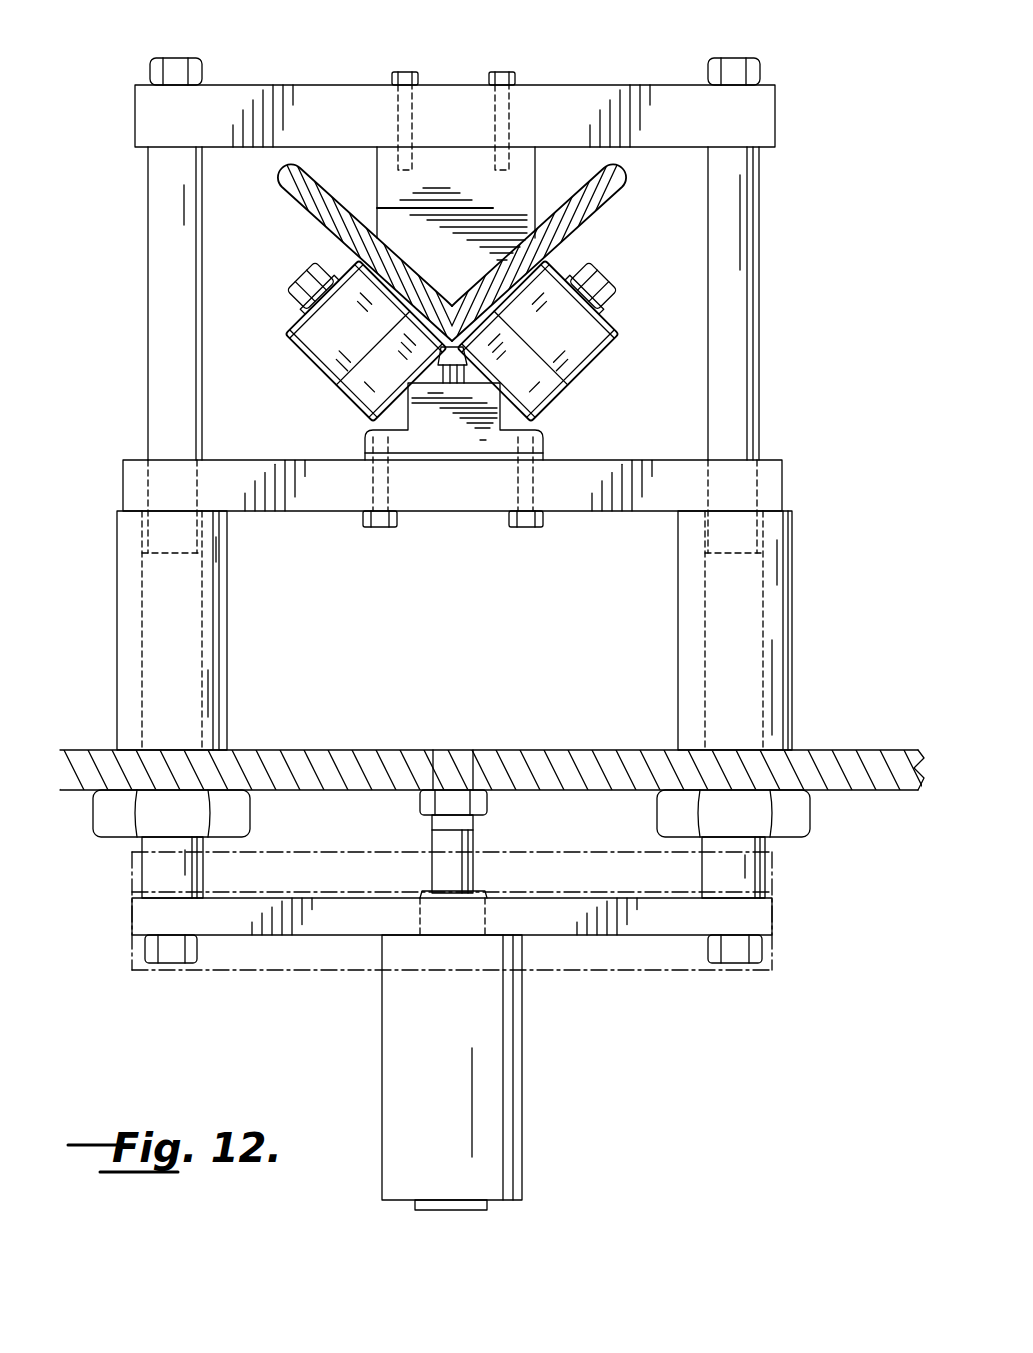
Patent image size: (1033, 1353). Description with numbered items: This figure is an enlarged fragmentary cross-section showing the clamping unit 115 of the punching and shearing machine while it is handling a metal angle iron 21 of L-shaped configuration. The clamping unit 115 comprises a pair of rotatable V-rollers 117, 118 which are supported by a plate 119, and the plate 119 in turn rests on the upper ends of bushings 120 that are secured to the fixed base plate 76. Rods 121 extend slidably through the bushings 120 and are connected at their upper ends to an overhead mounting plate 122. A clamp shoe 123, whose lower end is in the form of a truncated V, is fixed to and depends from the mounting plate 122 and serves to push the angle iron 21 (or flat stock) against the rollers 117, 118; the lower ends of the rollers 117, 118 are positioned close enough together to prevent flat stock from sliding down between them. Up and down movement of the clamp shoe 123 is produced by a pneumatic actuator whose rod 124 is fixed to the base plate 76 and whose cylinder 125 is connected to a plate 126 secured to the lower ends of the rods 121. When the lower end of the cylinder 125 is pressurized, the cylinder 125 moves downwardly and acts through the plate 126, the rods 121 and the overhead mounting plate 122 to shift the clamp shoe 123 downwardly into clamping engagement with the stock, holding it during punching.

The clamping unit 115 is at (316, 66).
The overhead mounting plate 122 is at (596, 95).
The clamp shoe 123 is at (387, 193).
The angle iron 21 is at (310, 201).
The rods 121 is at (158, 326).
The V-roller 117 is at (334, 371).
The V-roller 118 is at (590, 366).
The plate 119 is at (582, 508).
The bushings 120 is at (222, 628).
The base plate 76 is at (586, 750).
The rod 124 is at (470, 838).
The plate 126 is at (280, 940).
The cylinder 125 is at (500, 1058).